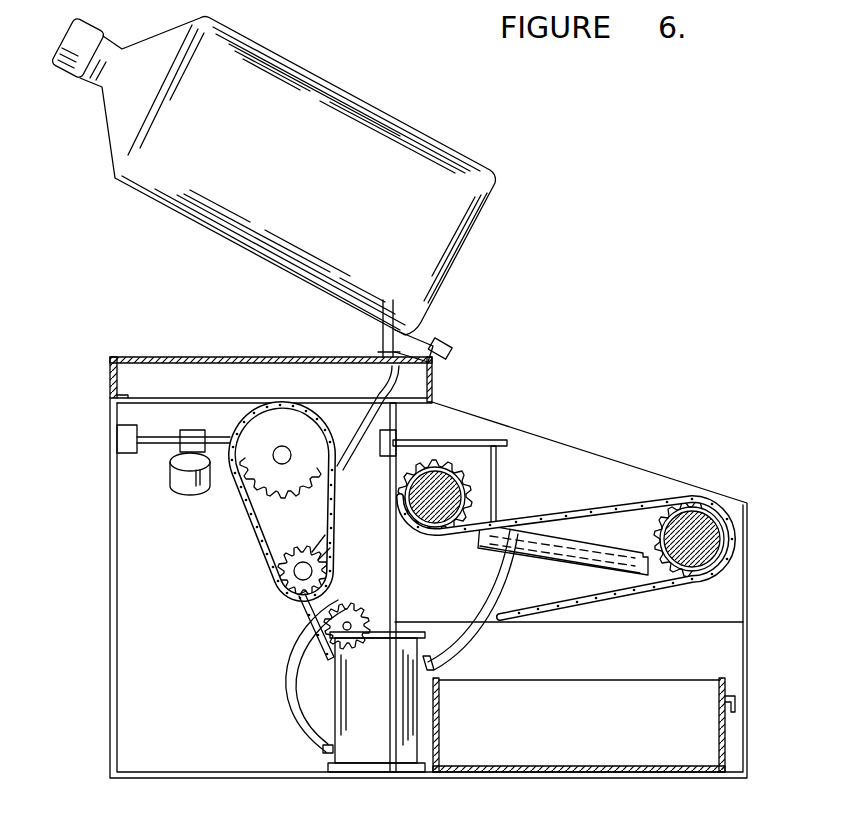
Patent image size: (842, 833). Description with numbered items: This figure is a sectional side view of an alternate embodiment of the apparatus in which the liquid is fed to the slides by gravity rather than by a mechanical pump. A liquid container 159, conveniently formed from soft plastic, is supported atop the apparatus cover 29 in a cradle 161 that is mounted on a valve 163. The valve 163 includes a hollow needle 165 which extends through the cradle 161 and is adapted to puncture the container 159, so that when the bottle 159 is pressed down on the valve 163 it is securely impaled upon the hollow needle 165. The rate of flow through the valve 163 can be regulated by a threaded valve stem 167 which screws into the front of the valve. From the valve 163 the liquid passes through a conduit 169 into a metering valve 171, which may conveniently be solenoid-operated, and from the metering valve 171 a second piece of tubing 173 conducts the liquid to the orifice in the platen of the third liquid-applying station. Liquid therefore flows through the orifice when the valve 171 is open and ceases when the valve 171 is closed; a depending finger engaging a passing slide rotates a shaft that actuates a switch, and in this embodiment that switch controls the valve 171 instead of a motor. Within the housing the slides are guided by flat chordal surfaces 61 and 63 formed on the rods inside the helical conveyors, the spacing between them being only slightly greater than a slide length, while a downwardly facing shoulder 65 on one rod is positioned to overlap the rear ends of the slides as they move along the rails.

The top cover or lid 29 is at (170, 357).
The liquid container 159 is at (432, 150).
The cradle 161 is at (228, 235).
The valve 163 is at (385, 338).
The hollow needle 165 is at (393, 291).
The threaded valve stem 167 is at (447, 354).
The downwardly facing shoulder 65 is at (483, 515).
The flat chordal surface 61 is at (665, 528).
The flat chordal surfaces 63 is at (452, 540).
The second piece of tubing 173 is at (472, 642).
The conduit 169 is at (281, 668).
The metering valve 171 is at (362, 752).